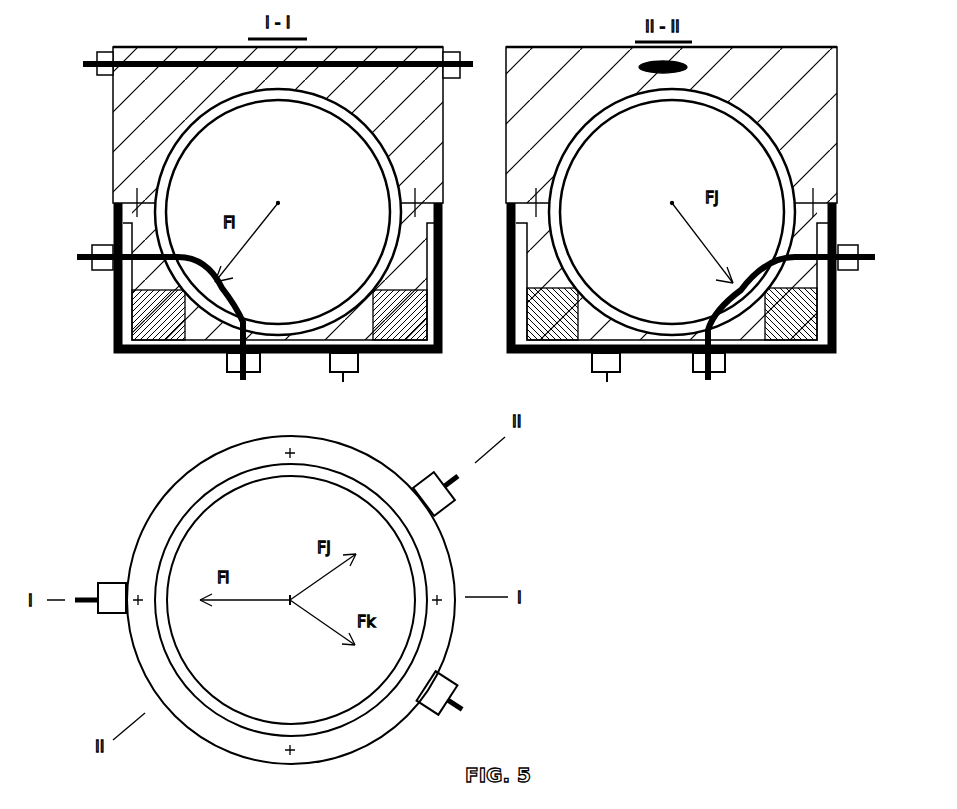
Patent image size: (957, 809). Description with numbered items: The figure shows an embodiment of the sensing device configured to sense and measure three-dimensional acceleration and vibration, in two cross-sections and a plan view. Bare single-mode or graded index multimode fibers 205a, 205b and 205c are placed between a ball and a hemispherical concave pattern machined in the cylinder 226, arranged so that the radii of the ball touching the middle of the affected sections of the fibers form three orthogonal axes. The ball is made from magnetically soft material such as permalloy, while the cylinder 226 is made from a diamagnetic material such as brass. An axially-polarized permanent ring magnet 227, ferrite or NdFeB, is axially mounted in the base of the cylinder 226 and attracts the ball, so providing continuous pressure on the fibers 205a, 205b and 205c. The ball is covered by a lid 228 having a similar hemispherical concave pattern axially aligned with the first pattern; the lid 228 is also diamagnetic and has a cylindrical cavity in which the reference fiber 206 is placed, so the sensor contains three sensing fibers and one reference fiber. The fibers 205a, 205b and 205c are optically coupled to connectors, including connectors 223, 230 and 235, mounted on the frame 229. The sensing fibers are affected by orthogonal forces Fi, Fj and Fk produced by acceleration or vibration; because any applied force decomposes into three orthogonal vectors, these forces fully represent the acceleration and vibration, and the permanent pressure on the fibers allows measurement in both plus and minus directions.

The reference fiber 206 is at (113, 77).
The lid 228 is at (113, 145).
The connector 230 is at (92, 272).
The fiber 205a is at (210, 298).
The cylinder 226 is at (368, 341).
The axially-polarized permanent ring magnet 227 is at (410, 341).
The frame 229 is at (445, 323).
The connector 223 is at (860, 272).
The fiber 205b is at (735, 295).
The fiber 205c is at (448, 670).
The connector 235 is at (457, 687).